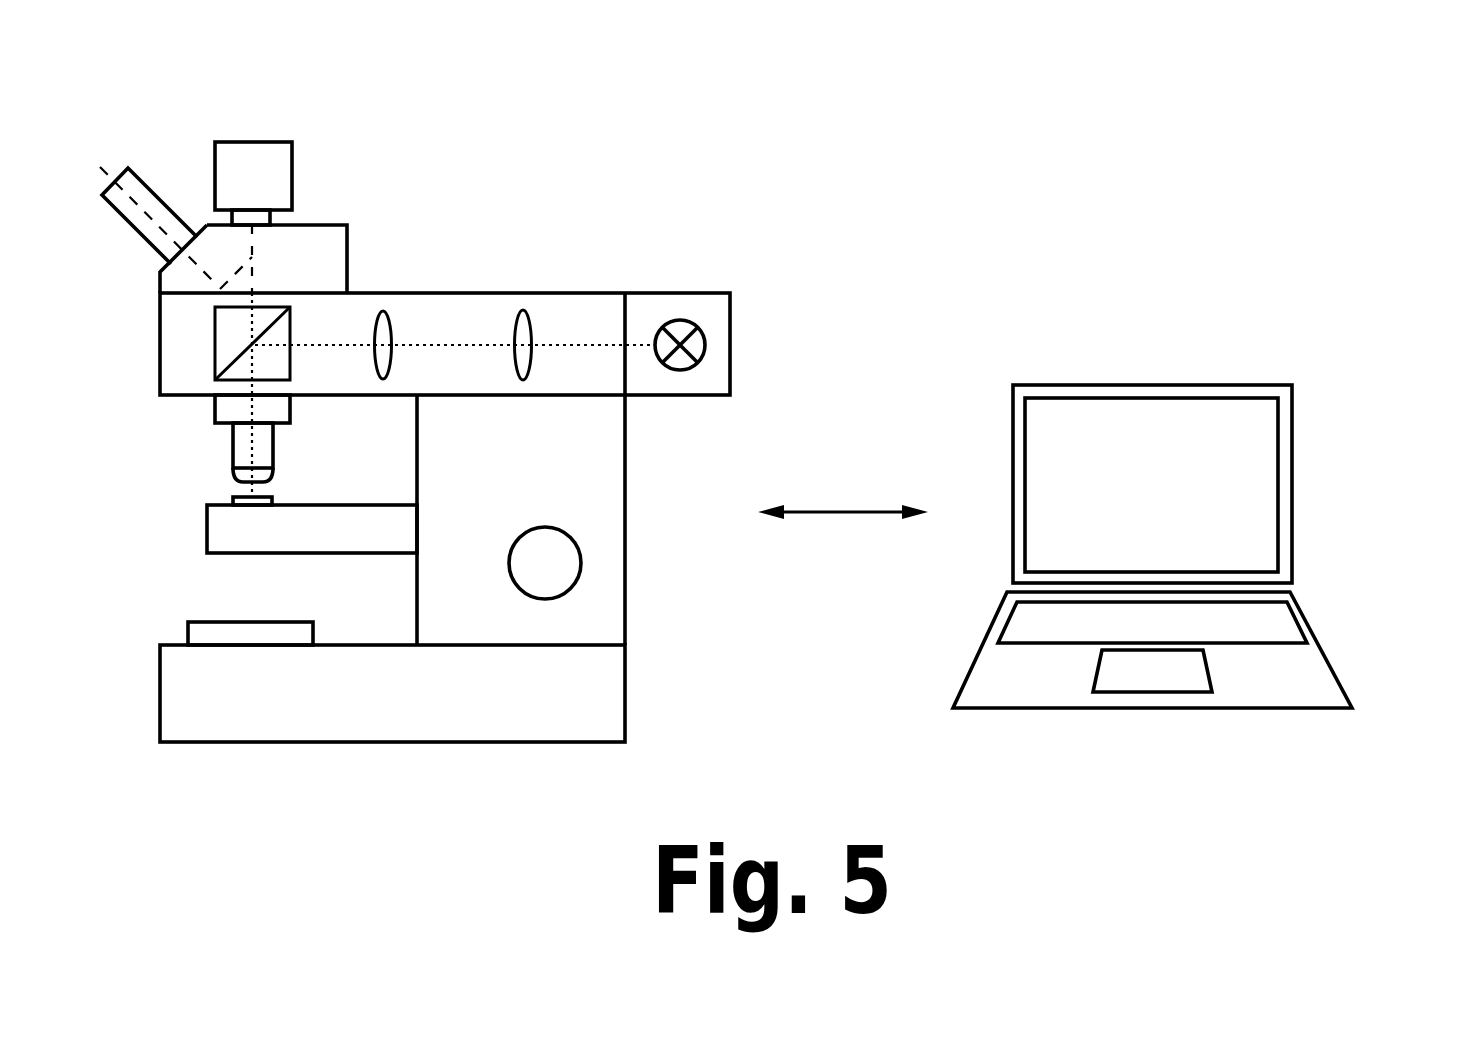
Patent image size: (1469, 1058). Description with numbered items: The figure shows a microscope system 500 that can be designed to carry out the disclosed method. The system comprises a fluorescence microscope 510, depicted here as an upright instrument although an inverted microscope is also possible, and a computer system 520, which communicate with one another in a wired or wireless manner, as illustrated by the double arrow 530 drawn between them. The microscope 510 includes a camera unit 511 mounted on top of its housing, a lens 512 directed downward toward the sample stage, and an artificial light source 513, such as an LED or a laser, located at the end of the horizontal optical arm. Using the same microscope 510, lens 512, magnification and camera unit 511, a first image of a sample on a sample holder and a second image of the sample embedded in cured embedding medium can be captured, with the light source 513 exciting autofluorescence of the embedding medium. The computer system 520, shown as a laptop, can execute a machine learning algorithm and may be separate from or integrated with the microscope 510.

The microscope system 500 is at (784, 390).
The microscope 510 is at (471, 390).
The camera unit 511 is at (248, 142).
The lens 512 is at (273, 440).
The artificial light source 513 is at (697, 325).
The computer system 520 is at (1307, 522).
The double arrow 530 is at (842, 508).